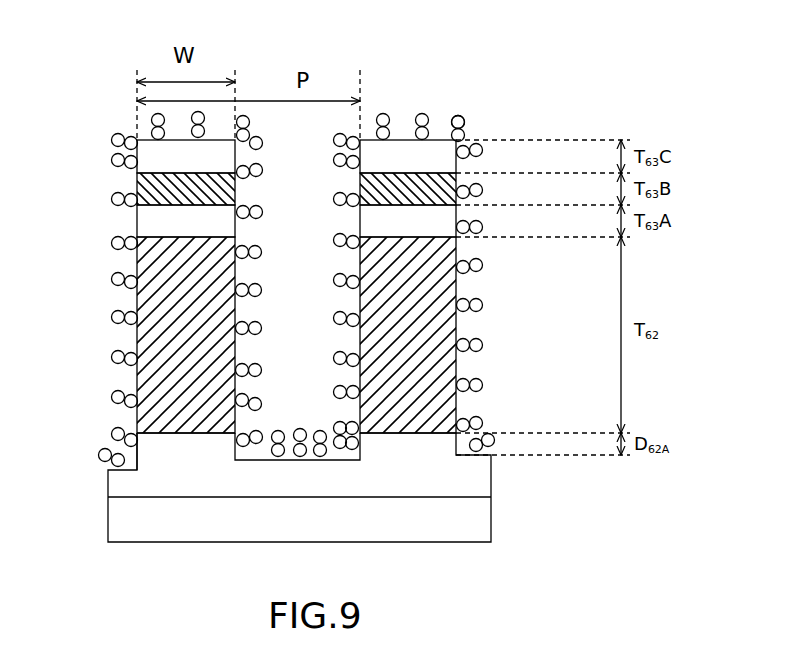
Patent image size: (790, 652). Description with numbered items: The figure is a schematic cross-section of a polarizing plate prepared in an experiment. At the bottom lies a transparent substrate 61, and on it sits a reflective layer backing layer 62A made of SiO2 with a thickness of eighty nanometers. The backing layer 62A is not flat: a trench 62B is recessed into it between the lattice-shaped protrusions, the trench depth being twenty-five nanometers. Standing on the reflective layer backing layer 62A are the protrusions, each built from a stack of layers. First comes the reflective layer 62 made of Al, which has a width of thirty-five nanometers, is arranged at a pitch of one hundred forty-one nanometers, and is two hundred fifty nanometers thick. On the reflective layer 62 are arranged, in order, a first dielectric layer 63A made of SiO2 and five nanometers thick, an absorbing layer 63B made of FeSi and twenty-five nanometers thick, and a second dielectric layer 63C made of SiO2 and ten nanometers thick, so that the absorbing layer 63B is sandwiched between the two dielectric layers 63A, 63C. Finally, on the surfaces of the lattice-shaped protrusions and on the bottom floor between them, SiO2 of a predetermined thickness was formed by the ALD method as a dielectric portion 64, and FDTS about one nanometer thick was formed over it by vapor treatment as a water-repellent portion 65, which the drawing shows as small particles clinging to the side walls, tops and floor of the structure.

The transparent substrate 61 is at (491, 518).
The reflective layer 62 is at (462, 283).
The reflective layer backing layer 62A is at (491, 478).
The trench 62B is at (137, 468).
The first dielectric layer 63A is at (462, 214).
The absorbing layer 63B is at (462, 181).
The second dielectric layer 63C is at (462, 156).
The dielectric portion 64 is at (468, 130).
The water-repellent portion 65 is at (466, 118).